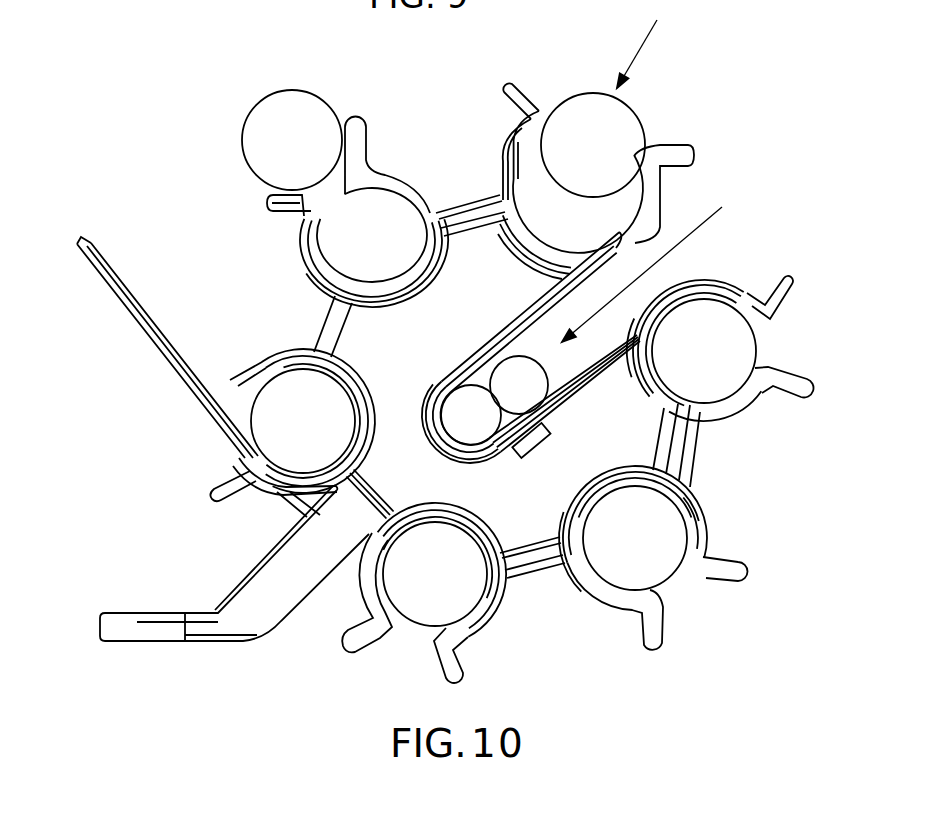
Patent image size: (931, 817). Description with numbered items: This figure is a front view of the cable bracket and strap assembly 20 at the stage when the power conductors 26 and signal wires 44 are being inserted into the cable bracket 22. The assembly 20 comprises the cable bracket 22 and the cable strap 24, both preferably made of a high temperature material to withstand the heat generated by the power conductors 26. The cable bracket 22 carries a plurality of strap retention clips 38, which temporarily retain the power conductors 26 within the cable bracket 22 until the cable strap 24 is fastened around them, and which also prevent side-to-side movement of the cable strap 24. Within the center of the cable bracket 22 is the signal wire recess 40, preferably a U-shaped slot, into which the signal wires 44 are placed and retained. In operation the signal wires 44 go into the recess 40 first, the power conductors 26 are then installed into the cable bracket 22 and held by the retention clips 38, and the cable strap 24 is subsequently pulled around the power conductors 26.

The cable bracket and strap assembly 20 is at (198, 228).
The cable bracket 22 is at (283, 623).
The cable strap 24 is at (167, 363).
The power conductors 26 is at (263, 107).
The retention clip 38 is at (790, 402).
The signal wire recess 40 is at (558, 370).
The signal wires 44 is at (465, 400).